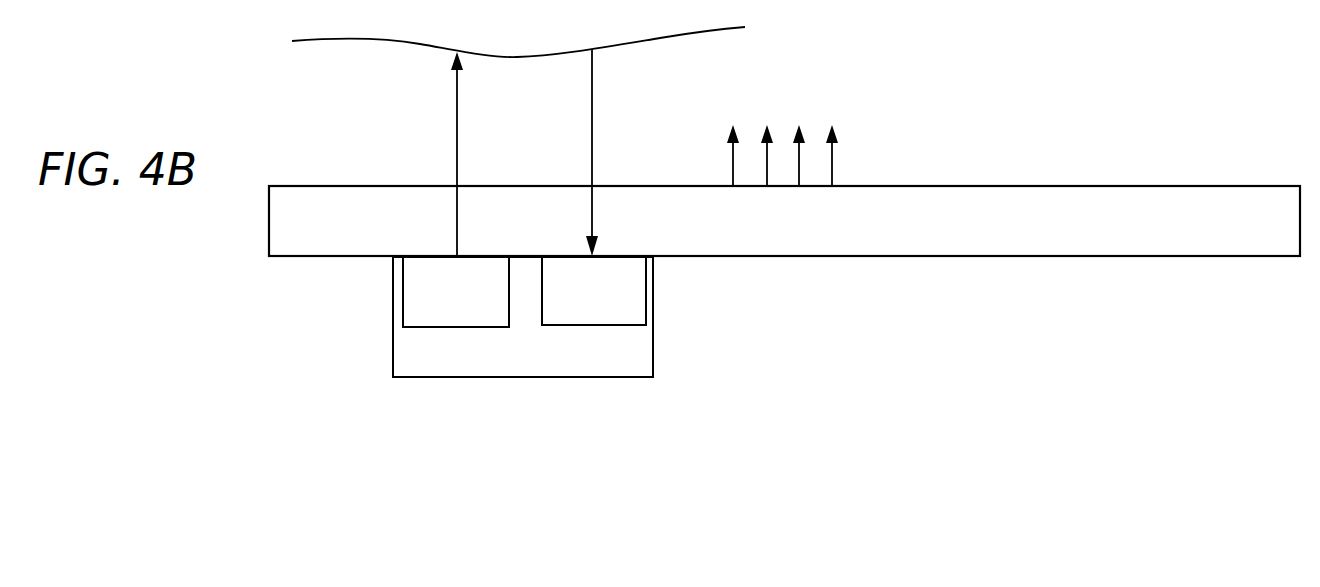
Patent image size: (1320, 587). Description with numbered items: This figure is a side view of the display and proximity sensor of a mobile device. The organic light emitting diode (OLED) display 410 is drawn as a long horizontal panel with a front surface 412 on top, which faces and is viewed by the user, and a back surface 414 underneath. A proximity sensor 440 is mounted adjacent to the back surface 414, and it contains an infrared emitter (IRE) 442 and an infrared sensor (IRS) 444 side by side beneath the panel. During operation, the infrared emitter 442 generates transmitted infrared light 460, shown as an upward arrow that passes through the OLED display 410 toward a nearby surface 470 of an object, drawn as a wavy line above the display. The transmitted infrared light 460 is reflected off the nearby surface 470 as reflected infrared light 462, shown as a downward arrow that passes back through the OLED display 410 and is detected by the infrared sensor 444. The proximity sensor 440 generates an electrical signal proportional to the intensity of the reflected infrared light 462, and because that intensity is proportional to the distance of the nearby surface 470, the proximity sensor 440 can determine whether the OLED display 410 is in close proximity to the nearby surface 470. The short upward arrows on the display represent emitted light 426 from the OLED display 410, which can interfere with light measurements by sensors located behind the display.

The organic light emitting diode (OLED) display 410 is at (784, 221).
The front surface 412 is at (1100, 175).
The back surface 414 is at (1104, 266).
The emitted light 426 is at (795, 133).
The proximity sensor 440 is at (523, 317).
The infrared emitter (IRE) 442 is at (456, 292).
The infrared sensor (IRS) 444 is at (594, 291).
The transmitted infrared light 460 is at (456, 104).
The reflected infrared light 462 is at (593, 142).
The nearby surface 470 is at (703, 30).